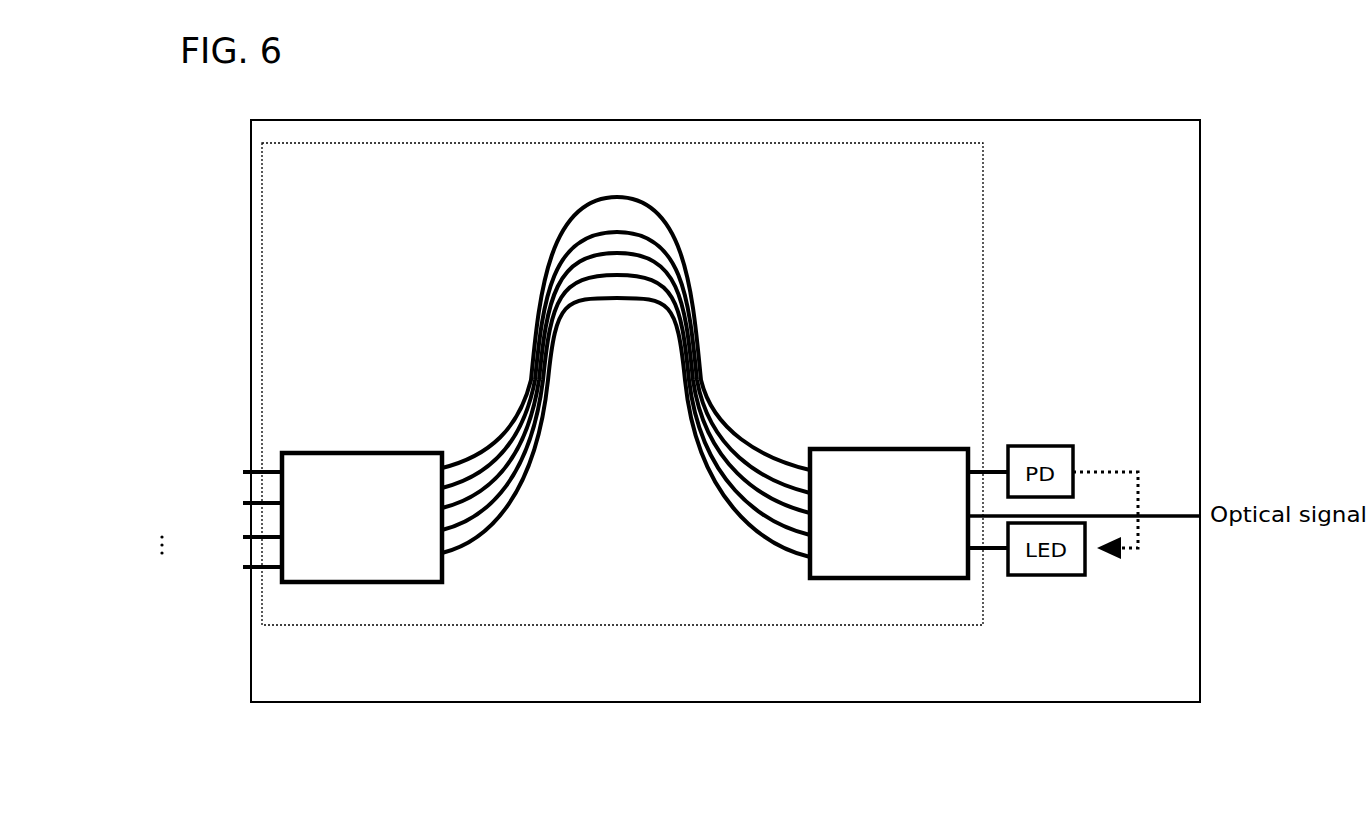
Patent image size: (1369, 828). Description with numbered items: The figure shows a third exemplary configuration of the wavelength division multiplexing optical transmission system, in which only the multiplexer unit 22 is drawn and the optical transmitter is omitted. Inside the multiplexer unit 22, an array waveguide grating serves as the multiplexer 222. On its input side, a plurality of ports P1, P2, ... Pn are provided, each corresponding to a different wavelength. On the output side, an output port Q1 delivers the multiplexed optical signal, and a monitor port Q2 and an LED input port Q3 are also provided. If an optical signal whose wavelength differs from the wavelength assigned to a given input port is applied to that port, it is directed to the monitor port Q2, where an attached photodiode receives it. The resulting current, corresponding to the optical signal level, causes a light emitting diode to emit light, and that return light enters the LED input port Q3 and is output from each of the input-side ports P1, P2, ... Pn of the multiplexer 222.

The multiplexer unit 22 is at (725, 393).
The multiplexer 222 is at (622, 384).
The input port P1 is at (208, 475).
The input port P2 is at (208, 511).
The input port Pn is at (208, 566).
The output port Q1 is at (968, 518).
The monitor port Q2 is at (968, 468).
The LED input port Q3 is at (968, 555).